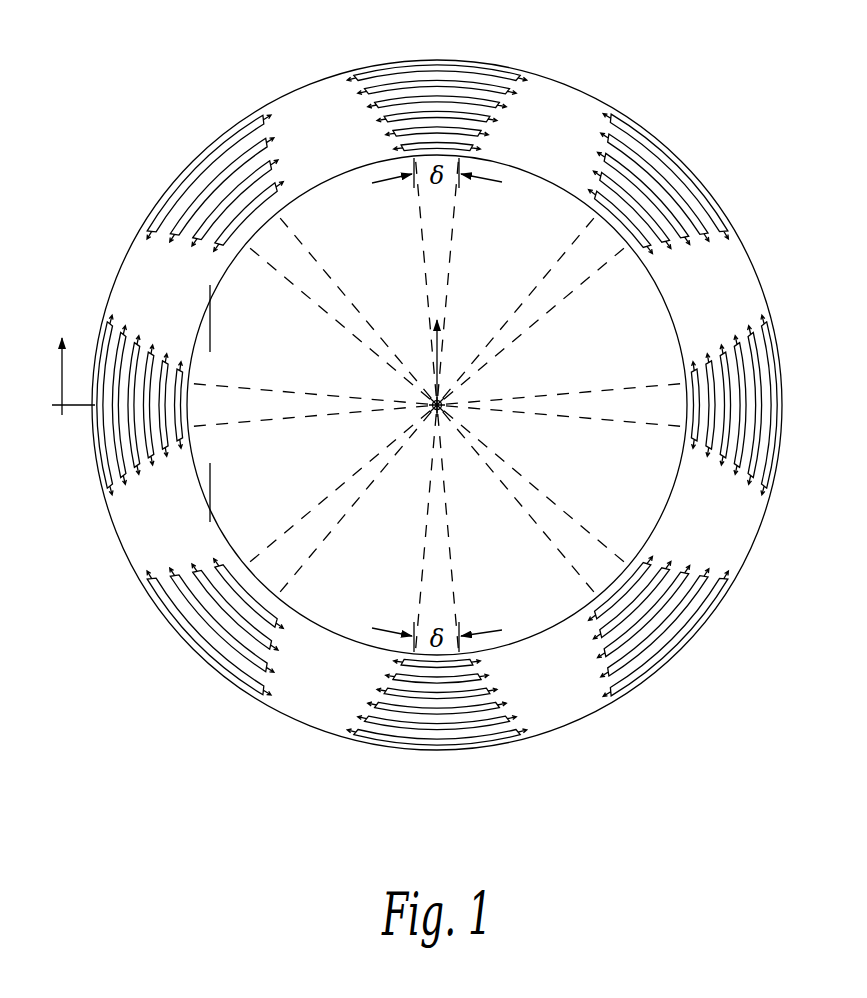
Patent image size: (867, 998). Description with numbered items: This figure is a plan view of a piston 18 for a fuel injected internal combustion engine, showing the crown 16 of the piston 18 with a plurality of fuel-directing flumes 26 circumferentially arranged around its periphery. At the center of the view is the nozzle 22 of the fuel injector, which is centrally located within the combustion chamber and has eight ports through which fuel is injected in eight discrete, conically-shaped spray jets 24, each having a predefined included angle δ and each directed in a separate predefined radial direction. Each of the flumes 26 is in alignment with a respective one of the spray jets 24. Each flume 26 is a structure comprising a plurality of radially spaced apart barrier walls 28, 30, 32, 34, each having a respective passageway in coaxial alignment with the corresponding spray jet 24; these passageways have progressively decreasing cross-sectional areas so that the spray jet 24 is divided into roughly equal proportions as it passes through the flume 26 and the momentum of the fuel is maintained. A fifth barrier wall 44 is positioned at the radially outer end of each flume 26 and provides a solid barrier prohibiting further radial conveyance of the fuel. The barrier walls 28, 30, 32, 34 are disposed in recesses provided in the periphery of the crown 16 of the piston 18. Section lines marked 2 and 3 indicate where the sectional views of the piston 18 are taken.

The section line 2- 2 is at (248, 352).
The section line 3- 3 is at (214, 305).
The crown 16 is at (522, 609).
The piston 18 is at (728, 310).
The nozzle 22 is at (447, 401).
The spray jets 24 is at (333, 272).
The flume 26 is at (461, 57).
The barrier wall 28 is at (270, 193).
The barrier wall 30 is at (213, 240).
The barrier wall 32 is at (264, 156).
The barrier wall 34 is at (172, 240).
The fifth barrier wall 44 is at (262, 122).